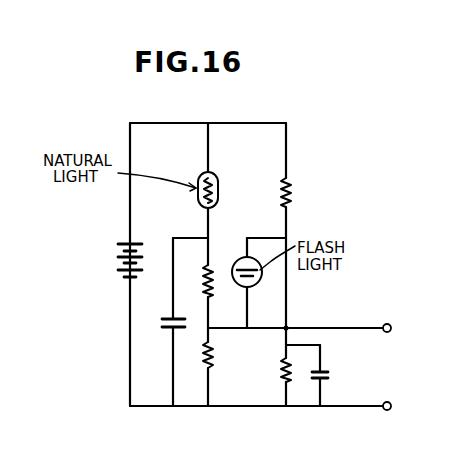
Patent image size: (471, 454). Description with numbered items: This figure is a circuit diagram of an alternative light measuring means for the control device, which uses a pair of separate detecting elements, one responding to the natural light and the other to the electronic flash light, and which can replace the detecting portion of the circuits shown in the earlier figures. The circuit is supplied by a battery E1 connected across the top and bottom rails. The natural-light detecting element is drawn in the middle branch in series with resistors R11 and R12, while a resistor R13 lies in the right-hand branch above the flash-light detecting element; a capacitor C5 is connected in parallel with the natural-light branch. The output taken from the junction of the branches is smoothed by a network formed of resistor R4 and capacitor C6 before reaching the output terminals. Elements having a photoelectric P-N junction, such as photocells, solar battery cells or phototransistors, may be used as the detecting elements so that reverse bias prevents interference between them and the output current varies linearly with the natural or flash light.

The battery E1 is at (111, 277).
The resistor R13 is at (300, 192).
The resistor R11 is at (221, 282).
The resistor R12 is at (221, 355).
The resistor R4 is at (275, 370).
The capacitor C5 is at (164, 322).
The capacitor C6 is at (331, 375).